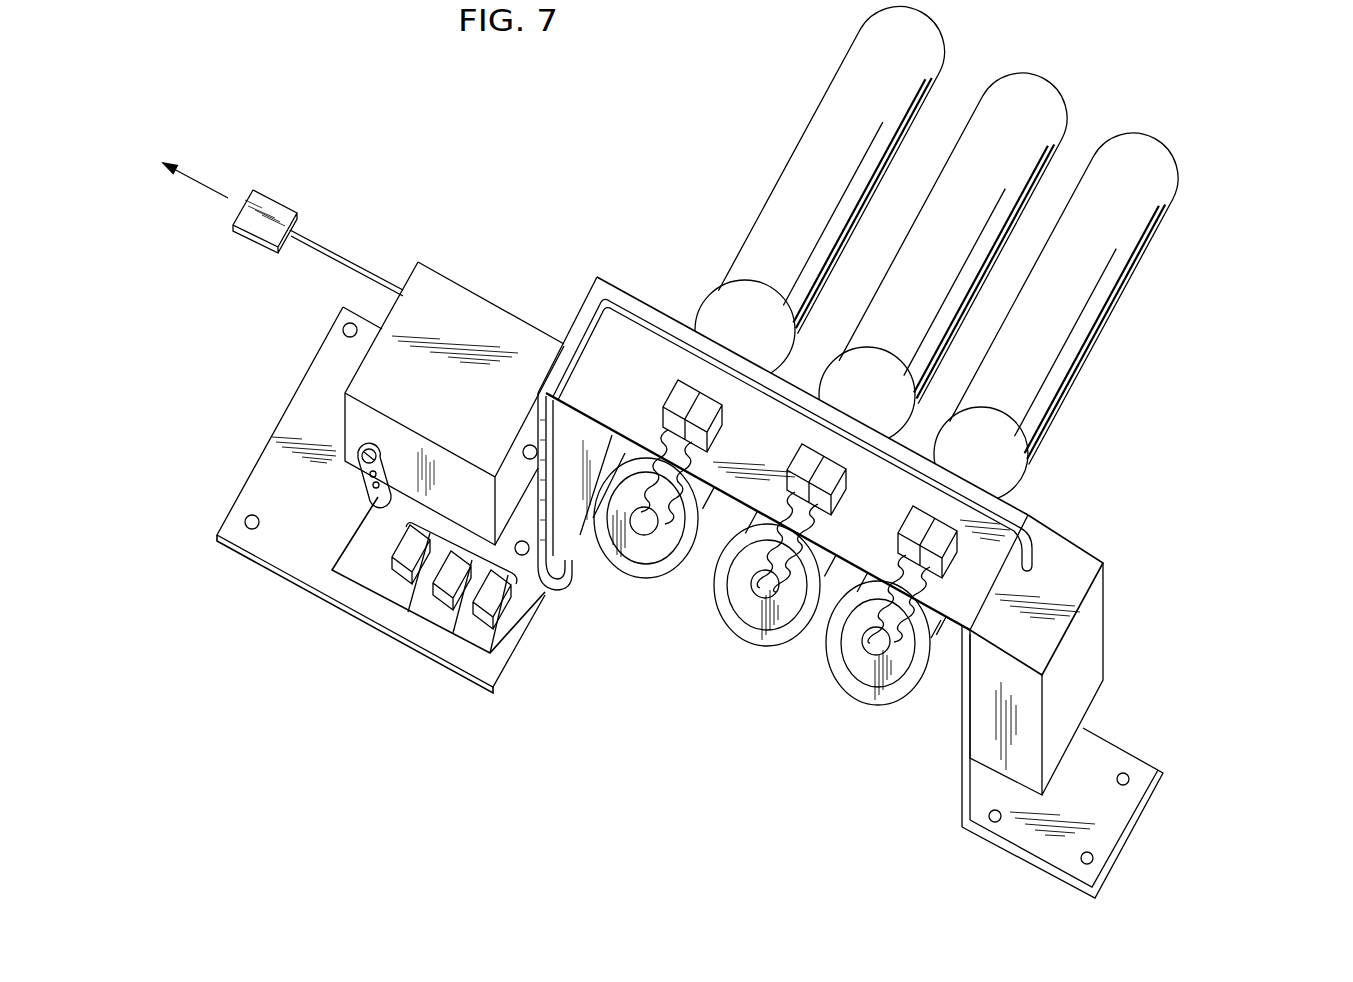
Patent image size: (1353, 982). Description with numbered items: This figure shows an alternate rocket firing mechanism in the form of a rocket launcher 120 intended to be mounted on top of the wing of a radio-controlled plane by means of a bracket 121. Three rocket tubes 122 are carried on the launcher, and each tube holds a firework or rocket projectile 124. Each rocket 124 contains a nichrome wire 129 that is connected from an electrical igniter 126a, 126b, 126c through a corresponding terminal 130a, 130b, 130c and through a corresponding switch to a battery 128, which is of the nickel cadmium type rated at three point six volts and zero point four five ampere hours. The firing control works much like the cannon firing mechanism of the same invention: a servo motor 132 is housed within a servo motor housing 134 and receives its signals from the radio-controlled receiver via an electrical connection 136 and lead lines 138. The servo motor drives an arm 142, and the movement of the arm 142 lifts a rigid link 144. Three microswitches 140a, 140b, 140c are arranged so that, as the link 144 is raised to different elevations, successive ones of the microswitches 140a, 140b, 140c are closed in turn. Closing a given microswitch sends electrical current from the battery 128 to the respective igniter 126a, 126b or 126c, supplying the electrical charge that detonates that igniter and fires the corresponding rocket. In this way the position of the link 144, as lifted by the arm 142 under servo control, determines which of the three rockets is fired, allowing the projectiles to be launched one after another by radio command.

The rocket launcher 120 is at (1075, 503).
The bracket 121 is at (263, 545).
The rocket tube 122 is at (758, 328).
The rocket projectile 124 is at (843, 92).
The electrical igniter 126a is at (644, 534).
The electrical igniter 126b is at (757, 598).
The electrical igniter 126c is at (878, 657).
The battery 128 is at (1093, 703).
The nichrome wire 129 is at (862, 636).
The terminal 130a is at (697, 407).
The terminal 130b is at (805, 466).
The terminal 130c is at (923, 527).
The servo motor 132 is at (386, 380).
The servo motor housing 134 is at (496, 303).
The electrical connection 136 is at (257, 226).
The lead line 138 is at (368, 270).
The microswitch 140a is at (361, 639).
The microswitch 140b is at (407, 664).
The microswitch 140c is at (452, 687).
The arm 142 is at (363, 478).
The rigid link 144 is at (345, 582).